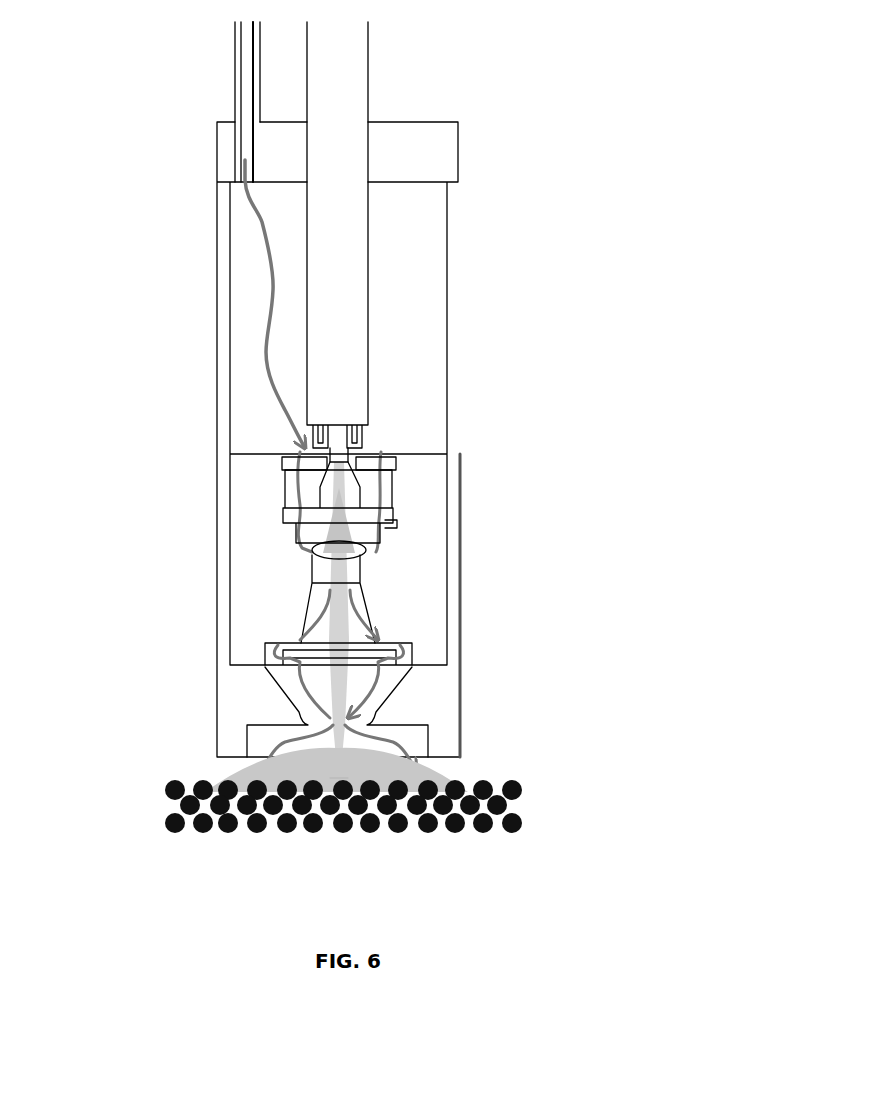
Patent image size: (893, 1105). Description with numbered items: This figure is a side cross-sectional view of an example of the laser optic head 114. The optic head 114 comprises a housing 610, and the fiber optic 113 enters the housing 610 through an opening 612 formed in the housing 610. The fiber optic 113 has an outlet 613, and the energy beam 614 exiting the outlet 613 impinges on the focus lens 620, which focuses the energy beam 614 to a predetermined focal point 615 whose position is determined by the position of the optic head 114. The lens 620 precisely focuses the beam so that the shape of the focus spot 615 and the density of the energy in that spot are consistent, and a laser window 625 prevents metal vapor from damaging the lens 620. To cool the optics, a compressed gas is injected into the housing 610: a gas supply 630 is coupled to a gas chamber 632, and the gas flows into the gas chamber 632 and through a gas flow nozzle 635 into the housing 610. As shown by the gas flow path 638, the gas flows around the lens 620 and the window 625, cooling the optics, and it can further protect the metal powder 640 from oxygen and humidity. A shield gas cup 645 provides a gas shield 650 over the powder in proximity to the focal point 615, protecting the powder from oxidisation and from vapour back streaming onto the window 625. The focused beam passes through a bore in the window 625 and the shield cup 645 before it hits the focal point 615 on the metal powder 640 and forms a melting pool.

The fiber optic 113 is at (370, 78).
The laser optic head 114 is at (602, 475).
The housing 610 is at (447, 563).
The opening 612 is at (352, 452).
The outlet 613 is at (318, 452).
The energy beam 614 is at (525, 490).
The focal point 615 is at (338, 777).
The focus lens 620 is at (303, 560).
The laser window 625 is at (537, 625).
The gas supply 630 is at (252, 102).
The gas chamber 632 is at (252, 228).
The gas flow nozzle 635 is at (387, 456).
The gas flow path 638 is at (287, 423).
The metal powder 640 is at (142, 800).
The shield gas cup 645 is at (285, 742).
The gas shield 650 is at (443, 770).